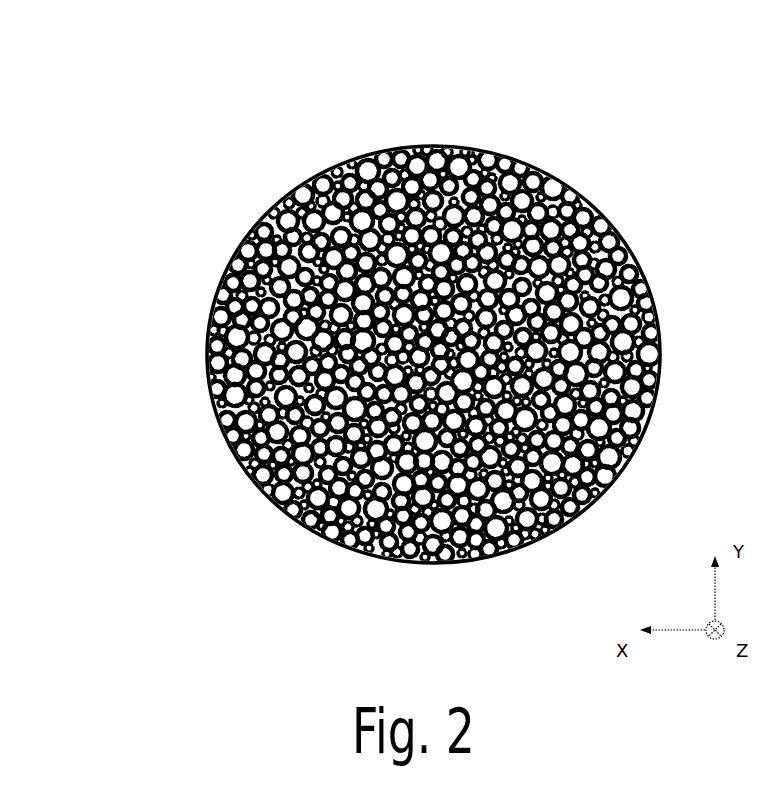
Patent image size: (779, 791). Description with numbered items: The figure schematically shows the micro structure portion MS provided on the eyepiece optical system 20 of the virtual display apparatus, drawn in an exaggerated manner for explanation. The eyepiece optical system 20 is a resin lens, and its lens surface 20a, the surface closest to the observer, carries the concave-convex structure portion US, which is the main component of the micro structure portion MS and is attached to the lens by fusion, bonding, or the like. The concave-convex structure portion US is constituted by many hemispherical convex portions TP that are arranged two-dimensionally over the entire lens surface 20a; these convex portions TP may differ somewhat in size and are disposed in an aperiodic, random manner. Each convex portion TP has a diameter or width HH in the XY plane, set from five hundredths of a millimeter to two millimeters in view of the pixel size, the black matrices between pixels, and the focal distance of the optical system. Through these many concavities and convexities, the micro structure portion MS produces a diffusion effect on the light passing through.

The eyepiece optical system 20 is at (588, 202).
The lens surface 20a is at (653, 298).
The micro structure portion MS is at (165, 90).
The concave-convex structure portion US is at (297, 137).
The convex portion TP is at (368, 195).
The diameter of the convex portion HH is at (212, 340).